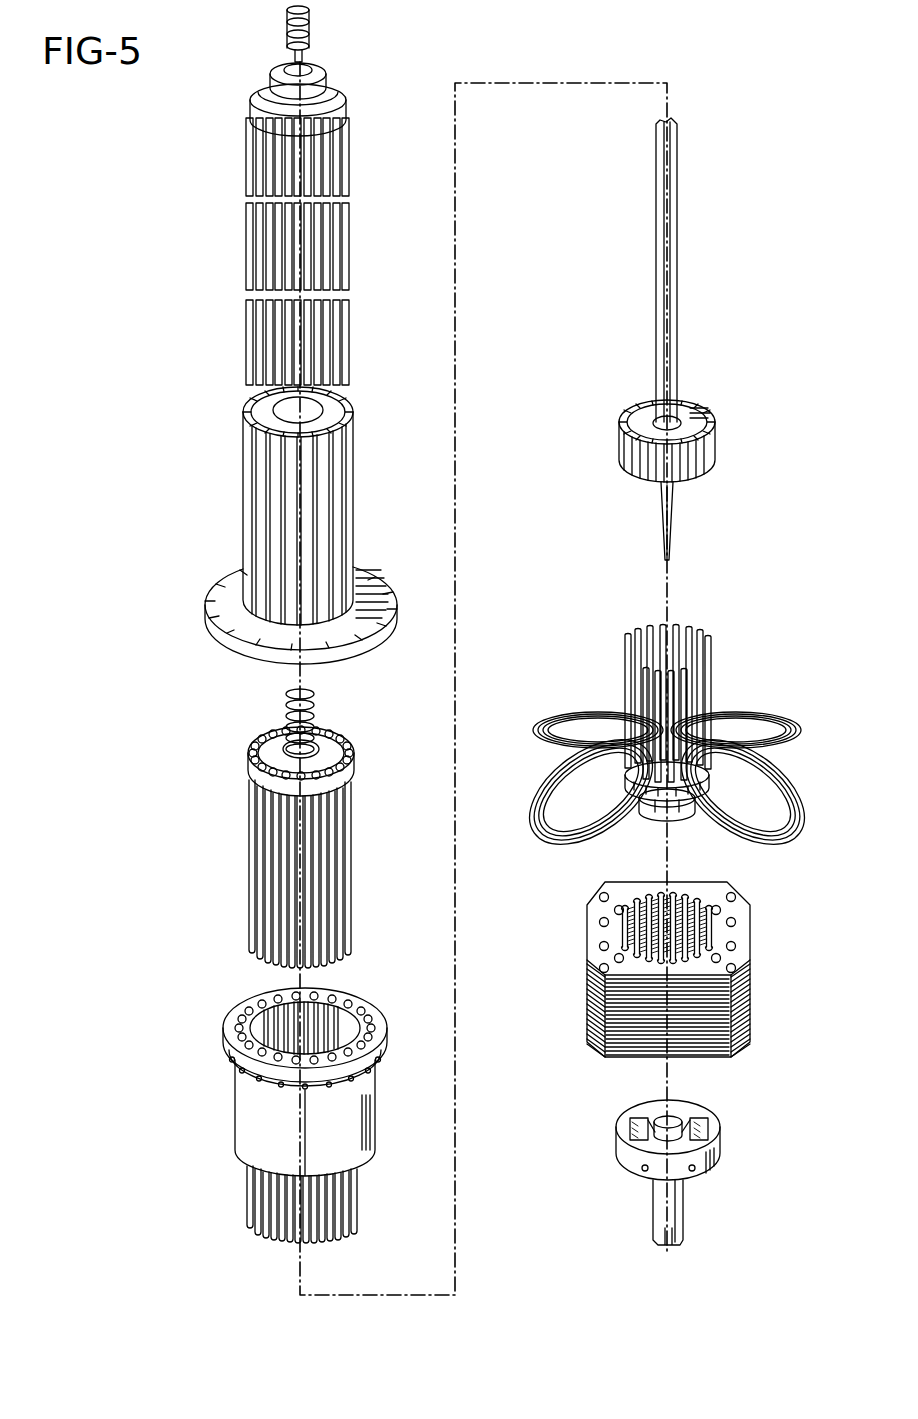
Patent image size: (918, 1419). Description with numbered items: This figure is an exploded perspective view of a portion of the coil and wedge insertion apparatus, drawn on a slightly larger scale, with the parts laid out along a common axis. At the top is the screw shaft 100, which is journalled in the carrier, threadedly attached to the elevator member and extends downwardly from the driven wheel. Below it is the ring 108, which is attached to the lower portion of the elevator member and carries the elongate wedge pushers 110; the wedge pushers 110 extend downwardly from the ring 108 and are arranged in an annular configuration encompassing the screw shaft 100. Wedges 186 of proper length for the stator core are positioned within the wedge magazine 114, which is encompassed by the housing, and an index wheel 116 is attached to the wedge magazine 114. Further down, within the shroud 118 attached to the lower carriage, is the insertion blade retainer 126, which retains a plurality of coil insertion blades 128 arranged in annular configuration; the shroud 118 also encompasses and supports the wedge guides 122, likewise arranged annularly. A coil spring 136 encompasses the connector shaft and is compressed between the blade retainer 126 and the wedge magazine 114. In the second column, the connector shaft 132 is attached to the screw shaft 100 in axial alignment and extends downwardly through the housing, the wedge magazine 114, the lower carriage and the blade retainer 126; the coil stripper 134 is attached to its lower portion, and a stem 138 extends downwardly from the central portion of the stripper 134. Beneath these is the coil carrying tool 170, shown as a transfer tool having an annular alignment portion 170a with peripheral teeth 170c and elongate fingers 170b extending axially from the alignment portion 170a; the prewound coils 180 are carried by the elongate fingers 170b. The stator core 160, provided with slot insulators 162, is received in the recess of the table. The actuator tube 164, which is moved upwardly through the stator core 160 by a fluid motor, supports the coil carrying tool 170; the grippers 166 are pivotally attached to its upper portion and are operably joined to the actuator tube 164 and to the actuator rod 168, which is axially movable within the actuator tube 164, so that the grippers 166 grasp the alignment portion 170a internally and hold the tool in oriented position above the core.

The screw shaft 100 is at (287, 31).
The ring 108 is at (258, 100).
The wedge pushers 110 is at (253, 233).
The wedges 186 is at (258, 350).
The wedge magazine 114 is at (249, 467).
The index wheel 116 is at (216, 580).
The coil spring 136 is at (284, 710).
The insertion blade retainer 126 is at (252, 752).
The coil insertion blades 128 is at (263, 890).
The wedge guides 122 is at (253, 1008).
The shroud 118 is at (243, 1098).
The connector shaft 132 is at (660, 250).
The coil stripper 134 is at (621, 448).
The stem 138 is at (658, 515).
The coil carrying tool 170 is at (647, 719).
The annular alignment portion 170a is at (663, 797).
The elongate fingers 170b is at (642, 678).
The peripheral teeth 170c is at (676, 805).
The prewound coils 180 is at (548, 775).
The stator core 160 is at (675, 969).
The slot insulators 162 is at (595, 917).
The actuator tube 164 is at (677, 1155).
The grippers 166 is at (646, 1120).
The actuator rod 168 is at (677, 1122).